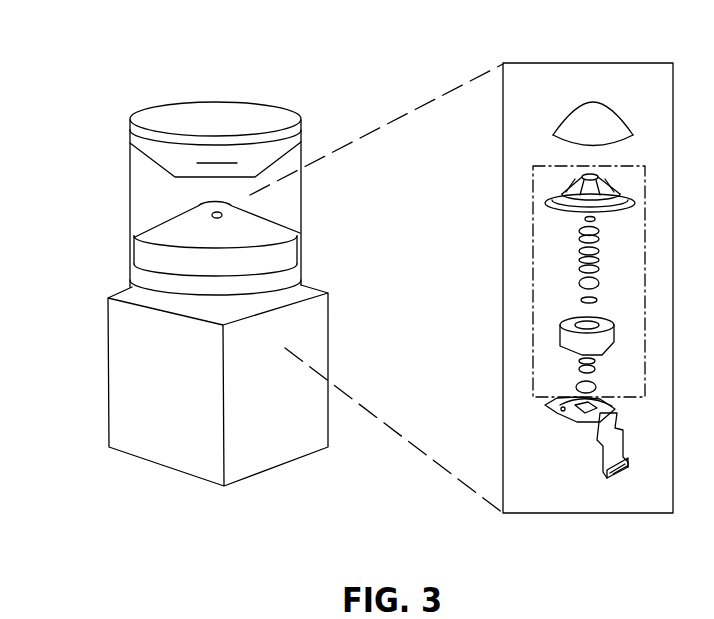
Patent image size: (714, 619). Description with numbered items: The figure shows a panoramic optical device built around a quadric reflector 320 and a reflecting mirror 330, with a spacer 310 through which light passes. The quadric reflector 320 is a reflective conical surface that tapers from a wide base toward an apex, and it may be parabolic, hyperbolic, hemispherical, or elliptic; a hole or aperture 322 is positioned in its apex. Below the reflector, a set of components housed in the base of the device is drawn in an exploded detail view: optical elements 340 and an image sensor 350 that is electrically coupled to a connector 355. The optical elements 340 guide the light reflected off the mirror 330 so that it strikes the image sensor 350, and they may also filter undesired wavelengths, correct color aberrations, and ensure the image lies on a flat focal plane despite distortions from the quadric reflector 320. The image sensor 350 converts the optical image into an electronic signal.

The spacer 310 is at (128, 186).
The quadric reflector 320 is at (258, 223).
The aperture 322 is at (593, 102).
The reflecting mirror 330 is at (212, 163).
The optical elements 340 is at (534, 228).
The image sensor 350 is at (572, 422).
The connector 355 is at (587, 459).